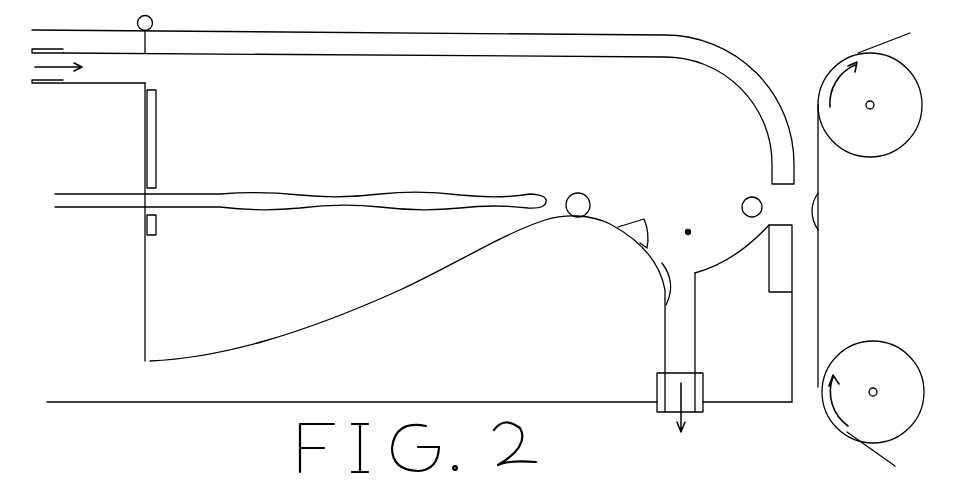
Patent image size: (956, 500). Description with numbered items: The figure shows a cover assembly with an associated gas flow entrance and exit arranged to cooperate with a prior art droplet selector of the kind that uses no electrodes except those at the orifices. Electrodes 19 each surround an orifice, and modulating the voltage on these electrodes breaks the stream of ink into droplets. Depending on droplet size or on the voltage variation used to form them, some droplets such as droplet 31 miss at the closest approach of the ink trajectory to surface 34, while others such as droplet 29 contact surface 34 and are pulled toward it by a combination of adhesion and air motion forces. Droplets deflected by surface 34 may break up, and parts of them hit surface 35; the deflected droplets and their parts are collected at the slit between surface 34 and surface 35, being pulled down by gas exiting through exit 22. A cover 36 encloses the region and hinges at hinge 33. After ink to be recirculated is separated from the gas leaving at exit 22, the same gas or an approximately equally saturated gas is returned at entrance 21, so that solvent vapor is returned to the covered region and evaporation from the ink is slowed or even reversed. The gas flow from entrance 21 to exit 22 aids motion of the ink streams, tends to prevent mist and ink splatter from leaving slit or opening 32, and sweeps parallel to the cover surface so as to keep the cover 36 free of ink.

The electrodes 19 is at (156, 138).
The entrance 21 is at (88, 70).
The exit 22 is at (698, 413).
The droplet 29 is at (637, 218).
The droplet 31 is at (742, 203).
The slit or opening 32 is at (777, 197).
The hinge 33 is at (140, 17).
The surface 34 is at (458, 265).
The surface 35 is at (740, 257).
The cover 36 is at (413, 107).